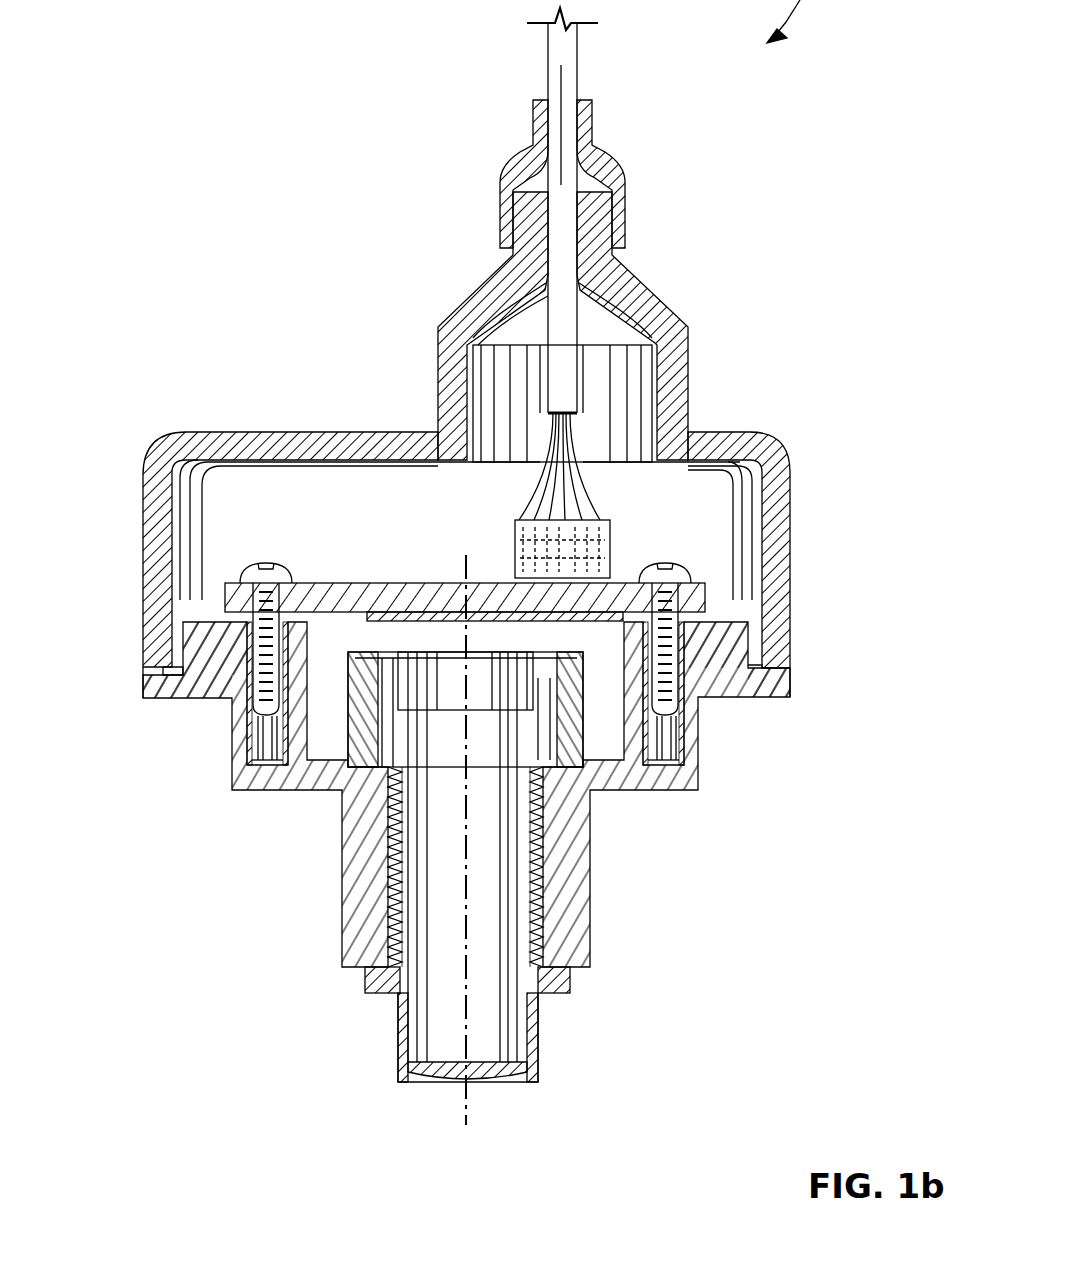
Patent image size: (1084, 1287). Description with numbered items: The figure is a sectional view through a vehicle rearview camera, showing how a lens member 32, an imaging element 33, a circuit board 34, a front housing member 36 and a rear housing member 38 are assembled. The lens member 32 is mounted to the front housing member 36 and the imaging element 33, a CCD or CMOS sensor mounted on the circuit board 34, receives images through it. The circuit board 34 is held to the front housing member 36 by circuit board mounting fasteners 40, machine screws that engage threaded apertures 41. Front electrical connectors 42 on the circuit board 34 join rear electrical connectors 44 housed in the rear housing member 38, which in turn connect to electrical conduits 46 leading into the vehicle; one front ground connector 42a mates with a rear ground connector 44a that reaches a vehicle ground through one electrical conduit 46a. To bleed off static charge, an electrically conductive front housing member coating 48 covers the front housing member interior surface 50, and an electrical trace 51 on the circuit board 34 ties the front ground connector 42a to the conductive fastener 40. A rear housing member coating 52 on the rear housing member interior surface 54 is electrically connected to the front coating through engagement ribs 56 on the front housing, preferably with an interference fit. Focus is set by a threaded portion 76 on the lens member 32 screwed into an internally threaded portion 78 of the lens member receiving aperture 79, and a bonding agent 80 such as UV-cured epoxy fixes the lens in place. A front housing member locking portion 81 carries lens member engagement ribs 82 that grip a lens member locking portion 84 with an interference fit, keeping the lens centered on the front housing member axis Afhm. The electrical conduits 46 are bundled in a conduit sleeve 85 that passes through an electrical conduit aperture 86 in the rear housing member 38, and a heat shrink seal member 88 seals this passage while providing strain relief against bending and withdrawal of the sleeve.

The lens member 32 is at (540, 1043).
The imaging element 33 is at (565, 637).
The circuit board 34 is at (705, 595).
The front housing member 36 is at (737, 698).
The rear housing member 38 is at (787, 457).
The circuit board mounting fastener 40 is at (242, 567).
The aperture 41 is at (262, 690).
The front electrical connector 42 is at (603, 540).
The front ground connector 42a is at (581, 466).
The rear electrical connector 44 is at (625, 550).
The rear ground connector 44a is at (513, 320).
The electrical conduit 46 is at (573, 467).
The electrical conduit 46a is at (587, 490).
The front housing member coating 48 is at (210, 580).
The front housing member interior surface 50 is at (188, 623).
The electrical trace 51 is at (623, 580).
The rear housing member coating 52 is at (344, 470).
The rear housing member interior surface 54 is at (386, 468).
The engagement rib 56 is at (190, 640).
The threaded portion 76 is at (576, 886).
The internally threaded portion 78 is at (524, 902).
The lens member receiving aperture 79 is at (550, 943).
The bonding agent 80 is at (540, 993).
The front housing member locking portion 81 is at (522, 864).
The lens member engagement rib 82 is at (550, 737).
The lens member locking portion 84 is at (540, 726).
The conduit sleeve 85 is at (563, 270).
The electrical conduit aperture 86 is at (575, 230).
The seal member 88 is at (532, 152).
The front housing member axis Afhm is at (466, 1108).